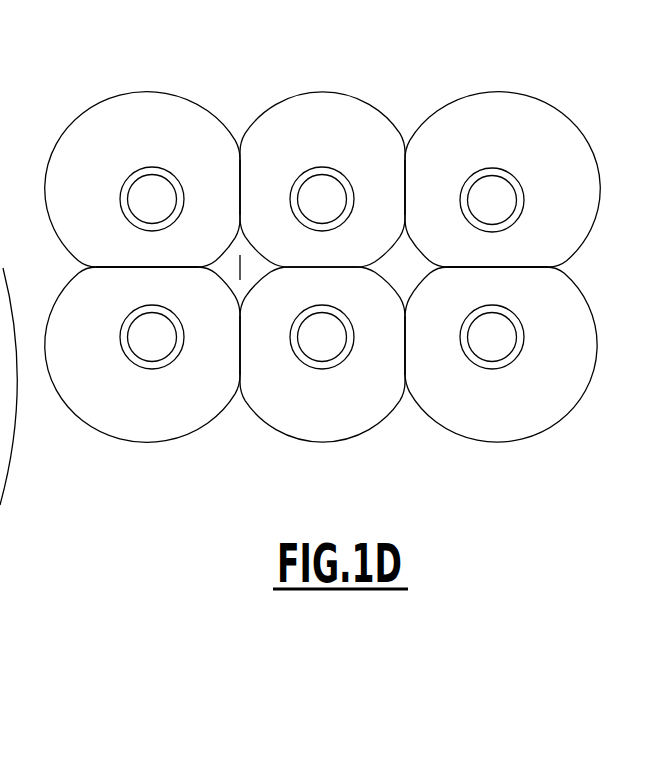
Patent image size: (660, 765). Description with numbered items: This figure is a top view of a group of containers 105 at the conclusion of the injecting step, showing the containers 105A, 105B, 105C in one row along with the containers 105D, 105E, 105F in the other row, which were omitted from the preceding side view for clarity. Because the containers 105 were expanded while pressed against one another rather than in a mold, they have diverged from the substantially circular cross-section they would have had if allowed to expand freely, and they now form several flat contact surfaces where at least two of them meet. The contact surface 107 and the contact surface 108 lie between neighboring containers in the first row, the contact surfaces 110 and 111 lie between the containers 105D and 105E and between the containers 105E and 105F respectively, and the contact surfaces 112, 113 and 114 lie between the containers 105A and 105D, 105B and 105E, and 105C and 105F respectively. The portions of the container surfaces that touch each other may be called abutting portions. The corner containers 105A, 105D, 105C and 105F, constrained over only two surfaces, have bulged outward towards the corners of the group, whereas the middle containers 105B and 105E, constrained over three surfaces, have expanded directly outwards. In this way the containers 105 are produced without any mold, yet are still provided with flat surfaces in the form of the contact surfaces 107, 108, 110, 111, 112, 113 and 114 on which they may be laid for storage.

The containers 105 is at (77, 453).
The container 105A is at (135, 443).
The container 105B is at (308, 443).
The container 105C is at (472, 442).
The container 105D is at (173, 92).
The container 105E is at (337, 92).
The container 105F is at (513, 92).
The contact surface 107 is at (240, 389).
The contact surface 108 is at (401, 389).
The contact surface 110 is at (239, 149).
The contact surface 111 is at (401, 149).
The contact surface 112 is at (78, 268).
The contact surface 113 is at (244, 268).
The contact surface 114 is at (564, 266).